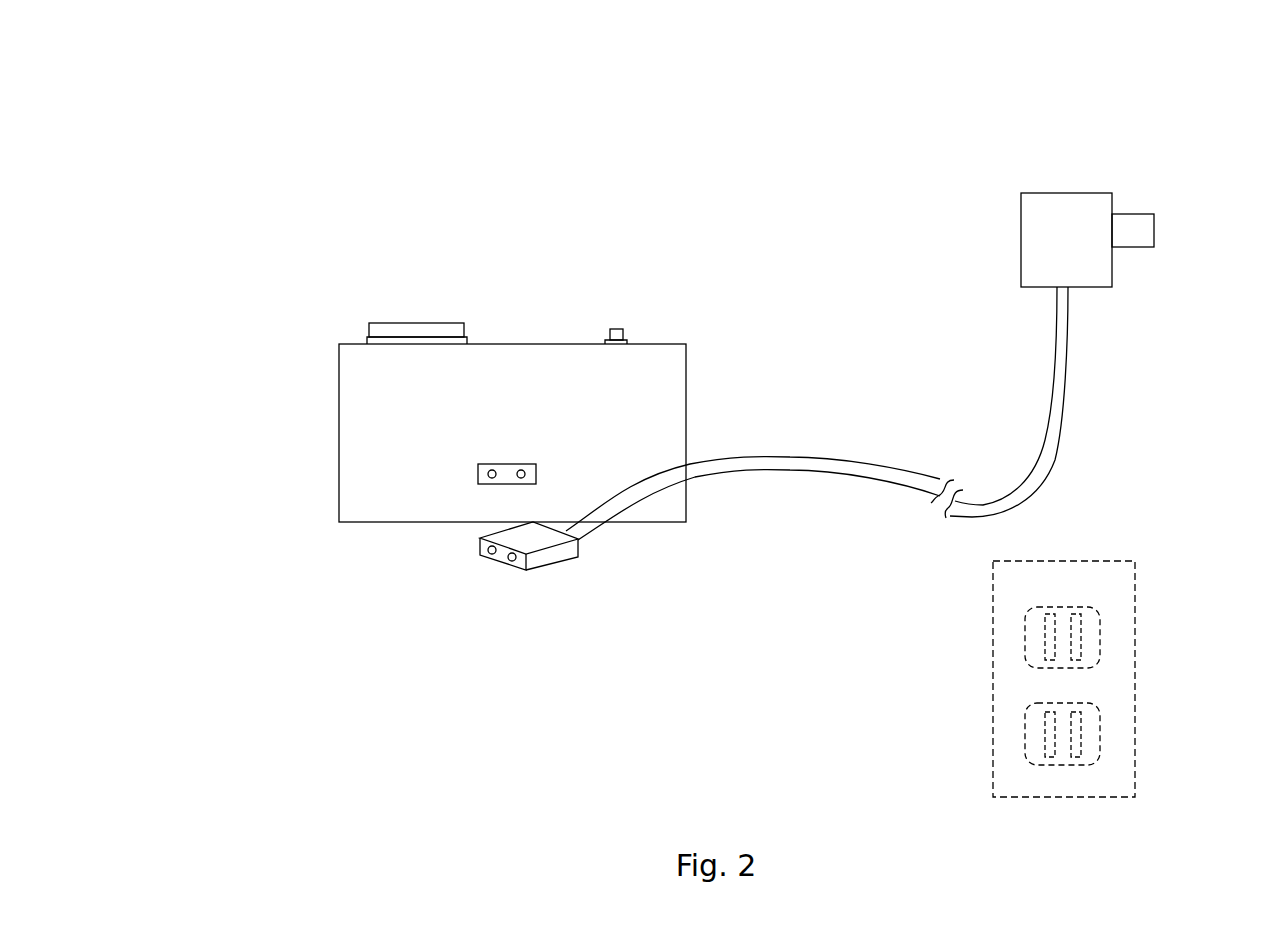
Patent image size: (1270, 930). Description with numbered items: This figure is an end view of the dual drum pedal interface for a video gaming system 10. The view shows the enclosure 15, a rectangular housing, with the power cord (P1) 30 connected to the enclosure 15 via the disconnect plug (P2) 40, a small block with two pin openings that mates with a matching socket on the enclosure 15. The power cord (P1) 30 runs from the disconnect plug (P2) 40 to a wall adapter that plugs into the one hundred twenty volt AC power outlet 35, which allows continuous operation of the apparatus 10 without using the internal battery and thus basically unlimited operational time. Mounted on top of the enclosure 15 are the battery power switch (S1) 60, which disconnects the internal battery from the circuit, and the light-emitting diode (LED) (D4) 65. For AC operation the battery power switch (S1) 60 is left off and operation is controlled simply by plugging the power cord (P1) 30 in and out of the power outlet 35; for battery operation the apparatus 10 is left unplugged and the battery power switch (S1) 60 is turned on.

The dual drum pedal interface for a video gaming system 10 is at (240, 173).
The enclosure 15 is at (686, 383).
The power cord (P1) 30 is at (983, 505).
The 120 VAC power outlet 35 is at (1117, 577).
The disconnect plug (P2) 40 is at (478, 480).
The battery power switch (S1) 60 is at (420, 330).
The light-emitting diode (LED) (D4) 65 is at (617, 330).